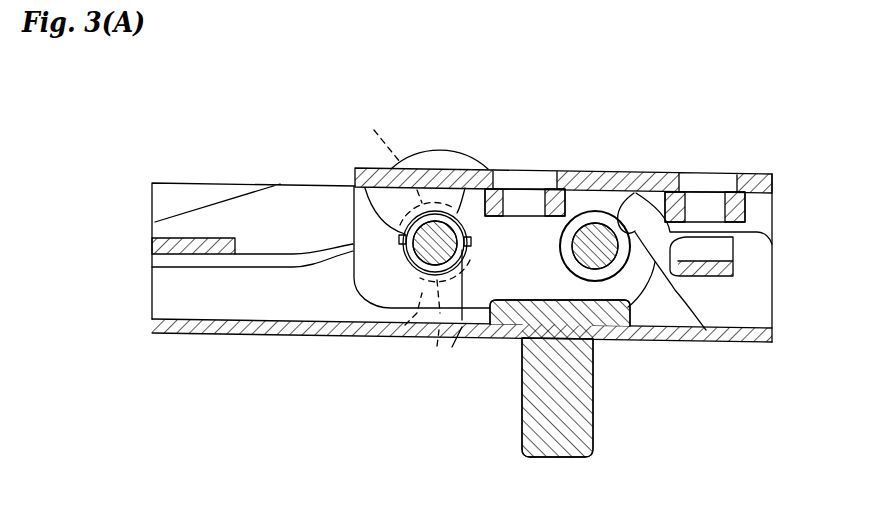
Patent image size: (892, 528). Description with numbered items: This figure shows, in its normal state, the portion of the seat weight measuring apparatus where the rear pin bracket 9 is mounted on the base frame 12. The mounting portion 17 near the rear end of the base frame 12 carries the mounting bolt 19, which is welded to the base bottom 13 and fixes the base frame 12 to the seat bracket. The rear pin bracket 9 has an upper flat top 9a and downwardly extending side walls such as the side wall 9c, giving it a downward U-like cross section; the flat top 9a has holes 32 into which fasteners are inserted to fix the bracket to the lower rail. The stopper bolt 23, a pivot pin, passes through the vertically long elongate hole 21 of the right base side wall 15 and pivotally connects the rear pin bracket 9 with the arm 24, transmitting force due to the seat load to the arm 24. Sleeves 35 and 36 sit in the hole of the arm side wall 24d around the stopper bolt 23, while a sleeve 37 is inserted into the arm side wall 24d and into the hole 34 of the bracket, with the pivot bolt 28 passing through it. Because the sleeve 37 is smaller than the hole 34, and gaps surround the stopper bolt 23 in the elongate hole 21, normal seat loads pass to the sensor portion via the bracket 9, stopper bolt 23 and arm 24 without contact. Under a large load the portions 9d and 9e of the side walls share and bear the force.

The rear pin bracket 9 is at (634, 163).
The flat top 9a is at (445, 187).
The side wall 9c is at (708, 332).
The portion between hole and lower edge of side wall 9d is at (405, 325).
The portion between hole and lower edge of side wall 9e is at (599, 300).
The base frame 12 is at (165, 304).
The base bottom 13 is at (317, 337).
The right base side wall 15 is at (172, 193).
The mounting portion 17 is at (484, 376).
The mounting bolt 19 is at (587, 405).
The elongate hole 21 is at (400, 265).
The stopper bolt 23 is at (360, 186).
The arm 24 is at (268, 262).
The arm side wall 24d is at (257, 215).
The pivot bolt 28 is at (588, 245).
The hole 32 is at (557, 180).
The hole 34 is at (663, 173).
The sleeve 35 is at (482, 168).
The sleeve 36 is at (459, 308).
The sleeve 37 is at (648, 253).